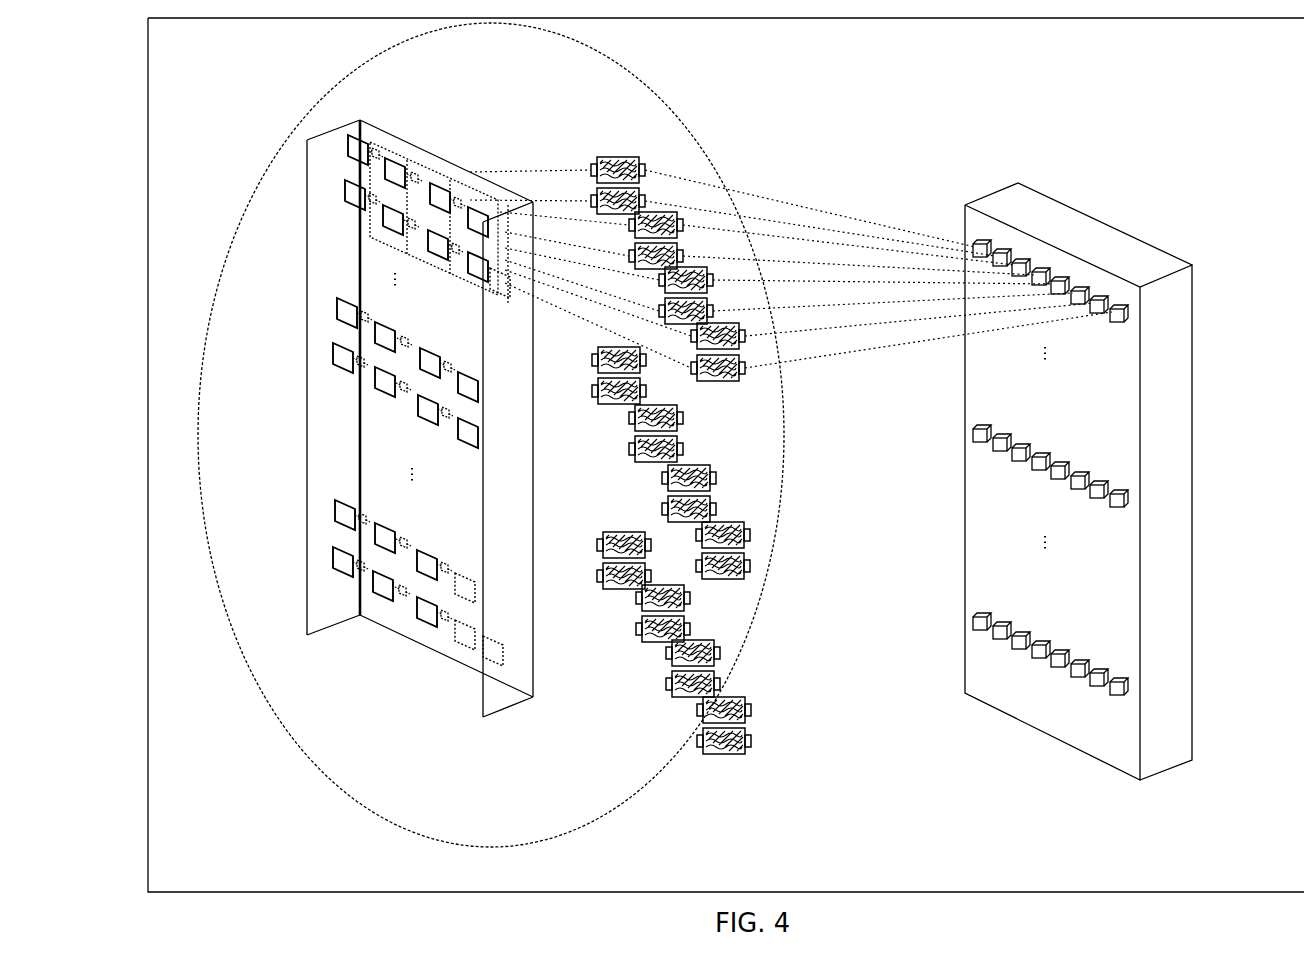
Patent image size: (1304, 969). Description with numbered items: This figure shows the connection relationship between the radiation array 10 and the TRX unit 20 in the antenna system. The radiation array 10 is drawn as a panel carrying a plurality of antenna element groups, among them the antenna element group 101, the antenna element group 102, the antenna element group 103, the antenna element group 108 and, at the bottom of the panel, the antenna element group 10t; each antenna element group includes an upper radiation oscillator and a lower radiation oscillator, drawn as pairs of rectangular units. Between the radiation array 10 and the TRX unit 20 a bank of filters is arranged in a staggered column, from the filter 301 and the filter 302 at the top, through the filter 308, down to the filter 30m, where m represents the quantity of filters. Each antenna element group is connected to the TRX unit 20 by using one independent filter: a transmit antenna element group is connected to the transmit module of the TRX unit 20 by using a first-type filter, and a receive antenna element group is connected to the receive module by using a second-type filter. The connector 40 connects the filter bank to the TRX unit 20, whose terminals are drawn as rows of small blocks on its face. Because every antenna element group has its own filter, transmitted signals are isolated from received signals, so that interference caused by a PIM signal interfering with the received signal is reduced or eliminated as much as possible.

The radiation array 10 is at (468, 157).
The antenna element group 101 is at (342, 175).
The antenna element group 102 is at (382, 206).
The antenna element group 103 is at (398, 222).
The antenna element group 108 is at (506, 302).
The antenna element group 10t is at (485, 657).
The connector 40 is at (850, 225).
The filter 301 is at (620, 163).
The filter 302 is at (622, 197).
The filter 308 is at (722, 377).
The filter 30m is at (750, 736).
The TRX unit 20 is at (1108, 222).